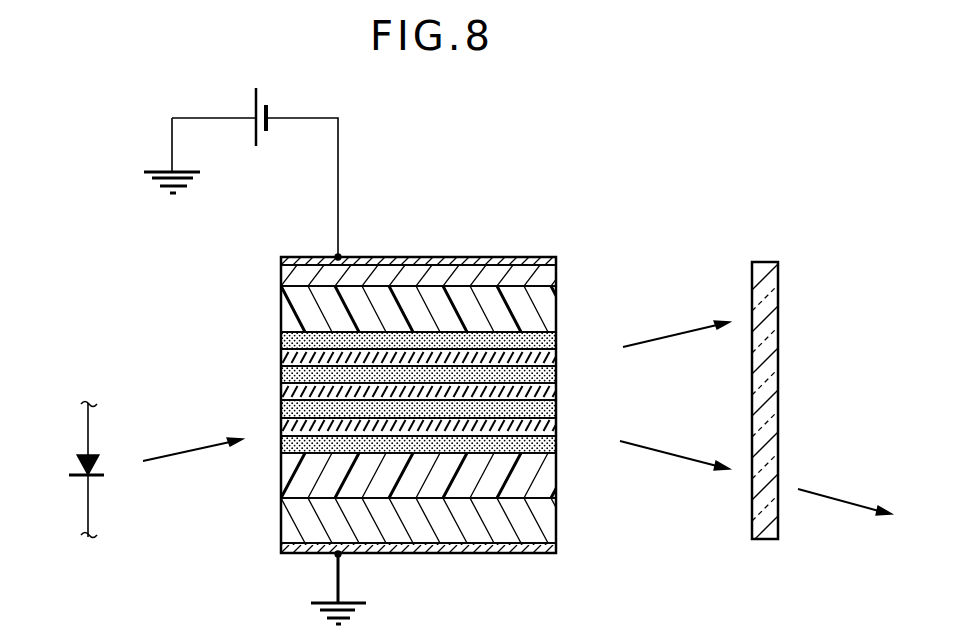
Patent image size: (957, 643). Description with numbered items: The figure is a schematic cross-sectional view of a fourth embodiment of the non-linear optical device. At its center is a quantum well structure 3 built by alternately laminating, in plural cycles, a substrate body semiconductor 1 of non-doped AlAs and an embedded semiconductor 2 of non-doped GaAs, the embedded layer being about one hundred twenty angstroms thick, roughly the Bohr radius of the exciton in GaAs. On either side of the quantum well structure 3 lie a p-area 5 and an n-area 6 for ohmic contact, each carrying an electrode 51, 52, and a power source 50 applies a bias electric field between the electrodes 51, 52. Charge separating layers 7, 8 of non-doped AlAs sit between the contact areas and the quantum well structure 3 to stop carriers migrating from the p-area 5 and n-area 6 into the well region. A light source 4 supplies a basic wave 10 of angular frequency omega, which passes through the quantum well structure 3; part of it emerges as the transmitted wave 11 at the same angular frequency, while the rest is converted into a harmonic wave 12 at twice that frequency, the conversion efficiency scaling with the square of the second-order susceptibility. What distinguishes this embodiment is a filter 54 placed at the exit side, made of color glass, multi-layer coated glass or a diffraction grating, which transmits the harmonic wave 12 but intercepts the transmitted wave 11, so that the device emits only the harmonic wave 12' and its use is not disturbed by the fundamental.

The substrate body semiconductor 1 is at (553, 355).
The embedded semiconductor 2 is at (556, 340).
The quantum well structure 3 is at (280, 335).
The laser diode light source 4 is at (67, 467).
The p-area 5 is at (556, 268).
The n-area 6 is at (553, 512).
The charge separating layer 7 is at (555, 303).
The charge separating layer 8 is at (553, 465).
The basic wave 10 is at (190, 452).
The transmitted wave 11 is at (677, 338).
The harmonic wave 12 is at (675, 469).
The harmonic wave 12' is at (845, 510).
The power source 50 is at (264, 93).
The electrode 51 is at (494, 257).
The electrode 52 is at (515, 555).
The filter 54 is at (778, 338).